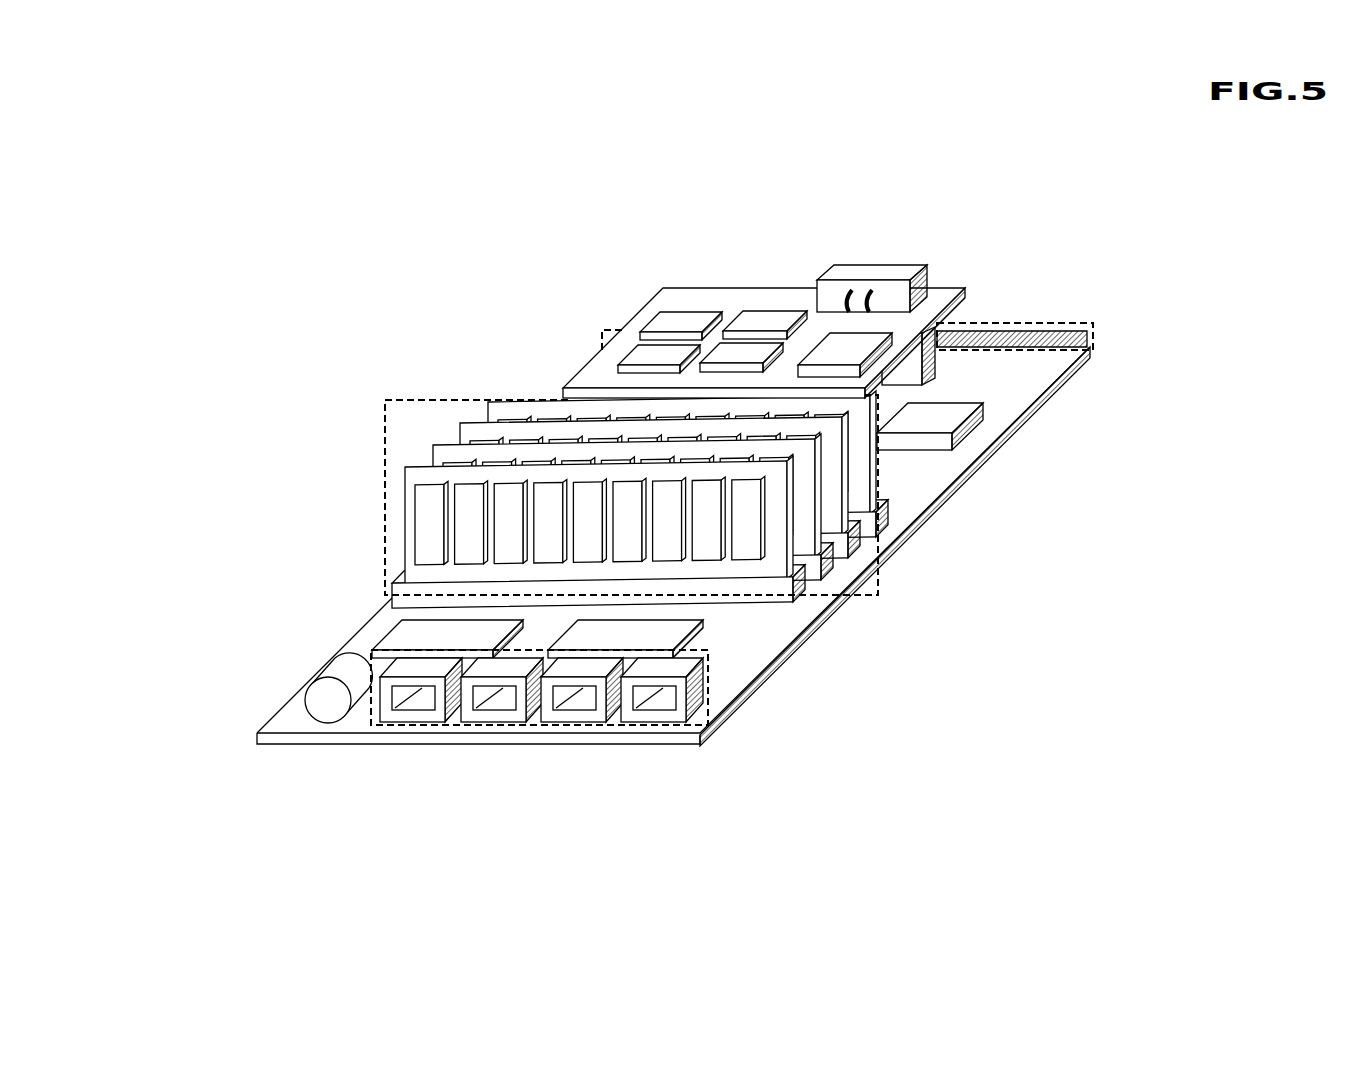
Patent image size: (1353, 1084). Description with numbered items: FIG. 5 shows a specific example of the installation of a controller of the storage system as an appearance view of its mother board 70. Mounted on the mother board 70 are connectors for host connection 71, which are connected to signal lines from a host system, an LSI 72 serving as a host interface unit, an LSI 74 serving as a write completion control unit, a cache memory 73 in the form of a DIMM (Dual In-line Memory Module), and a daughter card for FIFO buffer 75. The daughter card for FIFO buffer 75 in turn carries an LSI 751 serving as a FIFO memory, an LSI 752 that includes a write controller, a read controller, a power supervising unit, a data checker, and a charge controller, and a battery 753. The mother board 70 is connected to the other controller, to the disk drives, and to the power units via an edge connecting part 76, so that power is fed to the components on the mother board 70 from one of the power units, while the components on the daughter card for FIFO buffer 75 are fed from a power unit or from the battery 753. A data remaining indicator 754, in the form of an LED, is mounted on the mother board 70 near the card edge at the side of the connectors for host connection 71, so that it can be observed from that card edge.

The mother board 70 is at (422, 745).
The connectors for host connection 71 is at (403, 636).
The LSI serving as a host interface unit 72 is at (372, 650).
The cache memory 73 is at (812, 597).
The LSI serving as a write completion control unit 74 is at (708, 633).
The daughter card for FIFO buffer 75 is at (587, 364).
The LSI serving as a FIFO memory 751 is at (638, 356).
The LSI including write controller, read controller, power supervising unit, data ch 752 is at (827, 348).
The battery 753 is at (875, 270).
The data remaining indicator 754 is at (342, 720).
The edge connecting part 76 is at (968, 327).